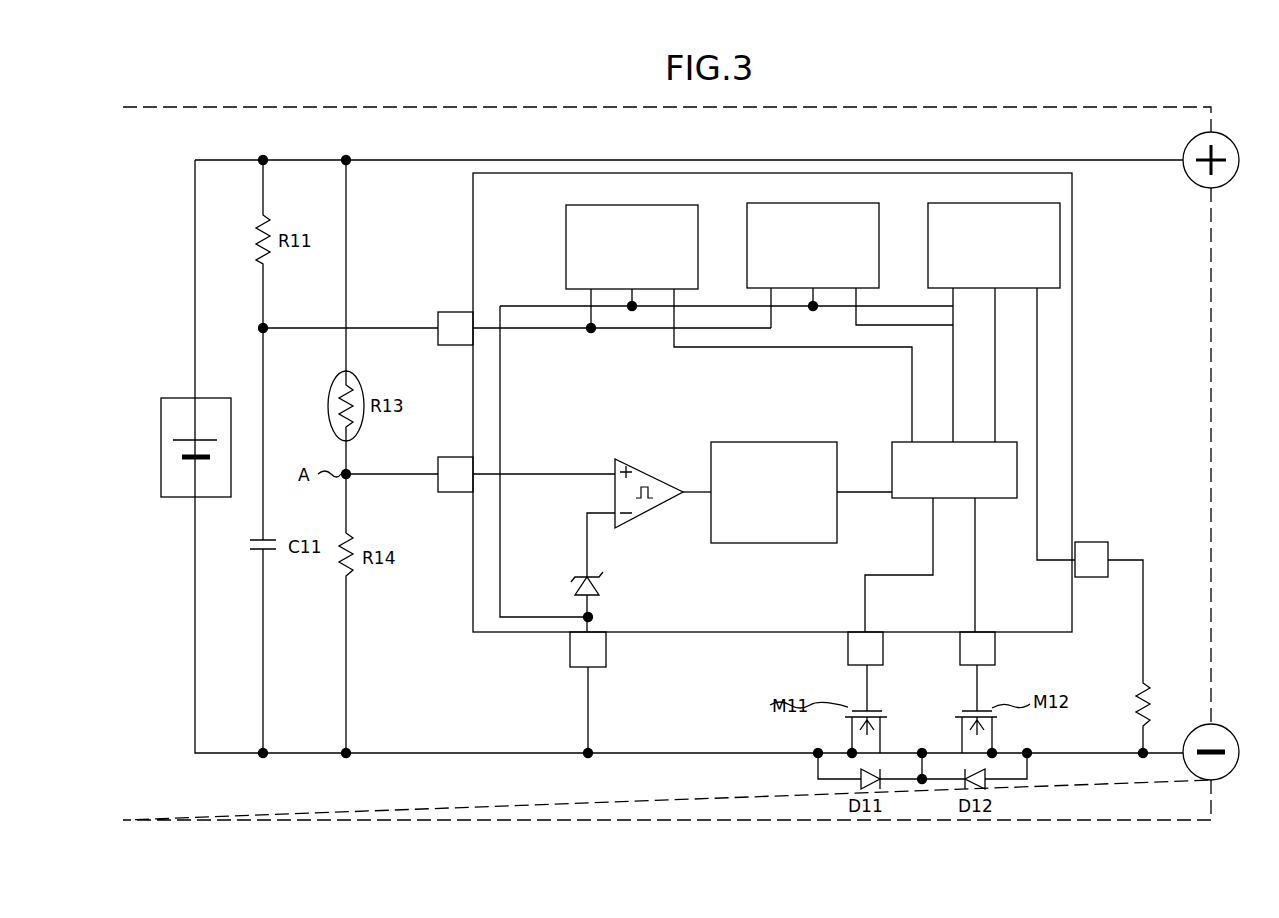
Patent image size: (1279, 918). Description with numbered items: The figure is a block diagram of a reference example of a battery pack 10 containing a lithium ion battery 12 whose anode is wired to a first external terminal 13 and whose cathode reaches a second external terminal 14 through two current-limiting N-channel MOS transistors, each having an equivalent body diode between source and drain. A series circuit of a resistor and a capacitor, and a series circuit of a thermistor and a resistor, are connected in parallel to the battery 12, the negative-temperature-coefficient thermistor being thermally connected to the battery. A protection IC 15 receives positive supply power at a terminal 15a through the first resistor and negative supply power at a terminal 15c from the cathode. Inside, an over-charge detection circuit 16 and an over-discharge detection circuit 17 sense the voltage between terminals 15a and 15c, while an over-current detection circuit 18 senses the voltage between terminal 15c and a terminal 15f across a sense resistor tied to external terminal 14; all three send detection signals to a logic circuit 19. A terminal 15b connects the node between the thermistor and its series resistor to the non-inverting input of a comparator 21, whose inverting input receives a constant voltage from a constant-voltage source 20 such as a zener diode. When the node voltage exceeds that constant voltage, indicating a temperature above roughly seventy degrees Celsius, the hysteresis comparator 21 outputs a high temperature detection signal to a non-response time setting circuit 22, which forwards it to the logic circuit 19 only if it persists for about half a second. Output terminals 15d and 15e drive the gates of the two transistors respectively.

The battery pack 10 is at (808, 107).
The lithium ion battery 12 is at (172, 497).
The external terminal 13 is at (1231, 180).
The external terminal 14 is at (1229, 732).
The protection IC 15 is at (1072, 310).
The terminal 15a is at (438, 345).
The terminal 15b is at (438, 462).
The terminal 15c is at (570, 650).
The terminal of DOUT output 15d is at (848, 665).
The terminal of COUT output 15e is at (960, 665).
The terminal 15f is at (1108, 545).
The over-charge detection circuit 16 is at (670, 205).
The over-discharge detection circuit 17 is at (851, 203).
The over-current detection circuit 18 is at (1004, 203).
The logic circuit 19 is at (1008, 498).
The constant-voltage source 20 is at (594, 598).
The comparator 21 is at (648, 472).
The non-response time setting circuit 22 is at (837, 515).